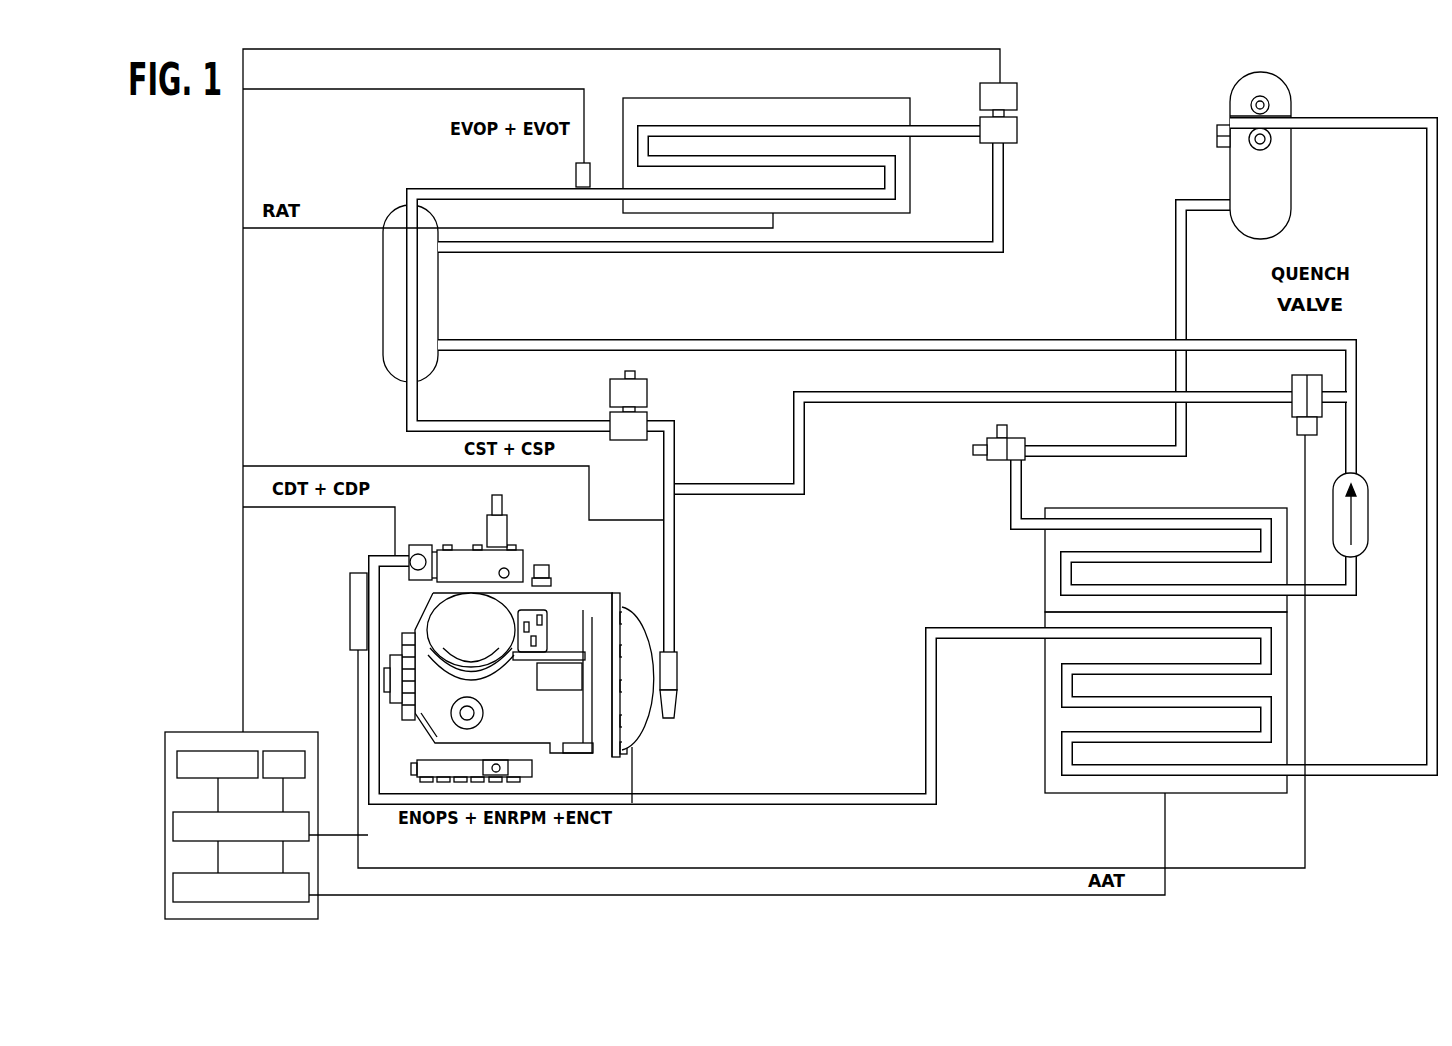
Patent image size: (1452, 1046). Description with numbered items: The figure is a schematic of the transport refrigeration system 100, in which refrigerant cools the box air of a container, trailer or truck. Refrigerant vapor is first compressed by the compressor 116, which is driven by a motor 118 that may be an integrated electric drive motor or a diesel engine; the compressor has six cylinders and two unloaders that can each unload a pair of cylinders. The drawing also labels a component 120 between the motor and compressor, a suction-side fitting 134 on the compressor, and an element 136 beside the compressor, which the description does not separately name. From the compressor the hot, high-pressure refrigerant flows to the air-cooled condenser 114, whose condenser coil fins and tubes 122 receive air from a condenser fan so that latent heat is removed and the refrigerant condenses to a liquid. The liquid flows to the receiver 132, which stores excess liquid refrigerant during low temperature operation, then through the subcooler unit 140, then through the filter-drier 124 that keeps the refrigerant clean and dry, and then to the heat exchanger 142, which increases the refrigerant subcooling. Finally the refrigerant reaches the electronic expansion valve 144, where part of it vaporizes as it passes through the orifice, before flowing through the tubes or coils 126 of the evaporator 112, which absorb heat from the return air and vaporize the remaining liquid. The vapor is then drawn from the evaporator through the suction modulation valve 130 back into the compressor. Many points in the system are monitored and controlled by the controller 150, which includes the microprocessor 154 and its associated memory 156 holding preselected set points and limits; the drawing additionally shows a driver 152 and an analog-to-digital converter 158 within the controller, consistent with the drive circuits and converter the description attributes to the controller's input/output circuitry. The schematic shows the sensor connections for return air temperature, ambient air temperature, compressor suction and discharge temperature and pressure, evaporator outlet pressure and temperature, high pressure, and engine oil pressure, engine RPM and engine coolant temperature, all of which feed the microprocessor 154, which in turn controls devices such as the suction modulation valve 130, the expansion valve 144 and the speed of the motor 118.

The transport refrigeration system 100 is at (1139, 106).
The evaporator 112 is at (911, 193).
The air-cooled condenser 114 is at (1288, 648).
The compressor 116 is at (596, 636).
The motor 118 is at (648, 738).
The shaft coupling 120 is at (390, 688).
The condenser coil fins and tubes 122 is at (1273, 712).
The filter-drier 124 is at (1408, 544).
The evaporator tubes or coils 126 is at (697, 124).
The suction modulation valve 130 is at (610, 388).
The receiver 132 is at (1291, 200).
The suction service valve 134 is at (677, 648).
The engine sensor unit 136 is at (350, 604).
The subcooler unit 140 is at (1045, 580).
The heat exchanger 142 is at (438, 303).
The electronic expansion valve 144 is at (1018, 138).
The controller 150 is at (217, 808).
The driver 152 is at (192, 751).
The microprocessor 154 is at (173, 818).
The memory 156 is at (173, 877).
The A/D converter 158 is at (281, 751).